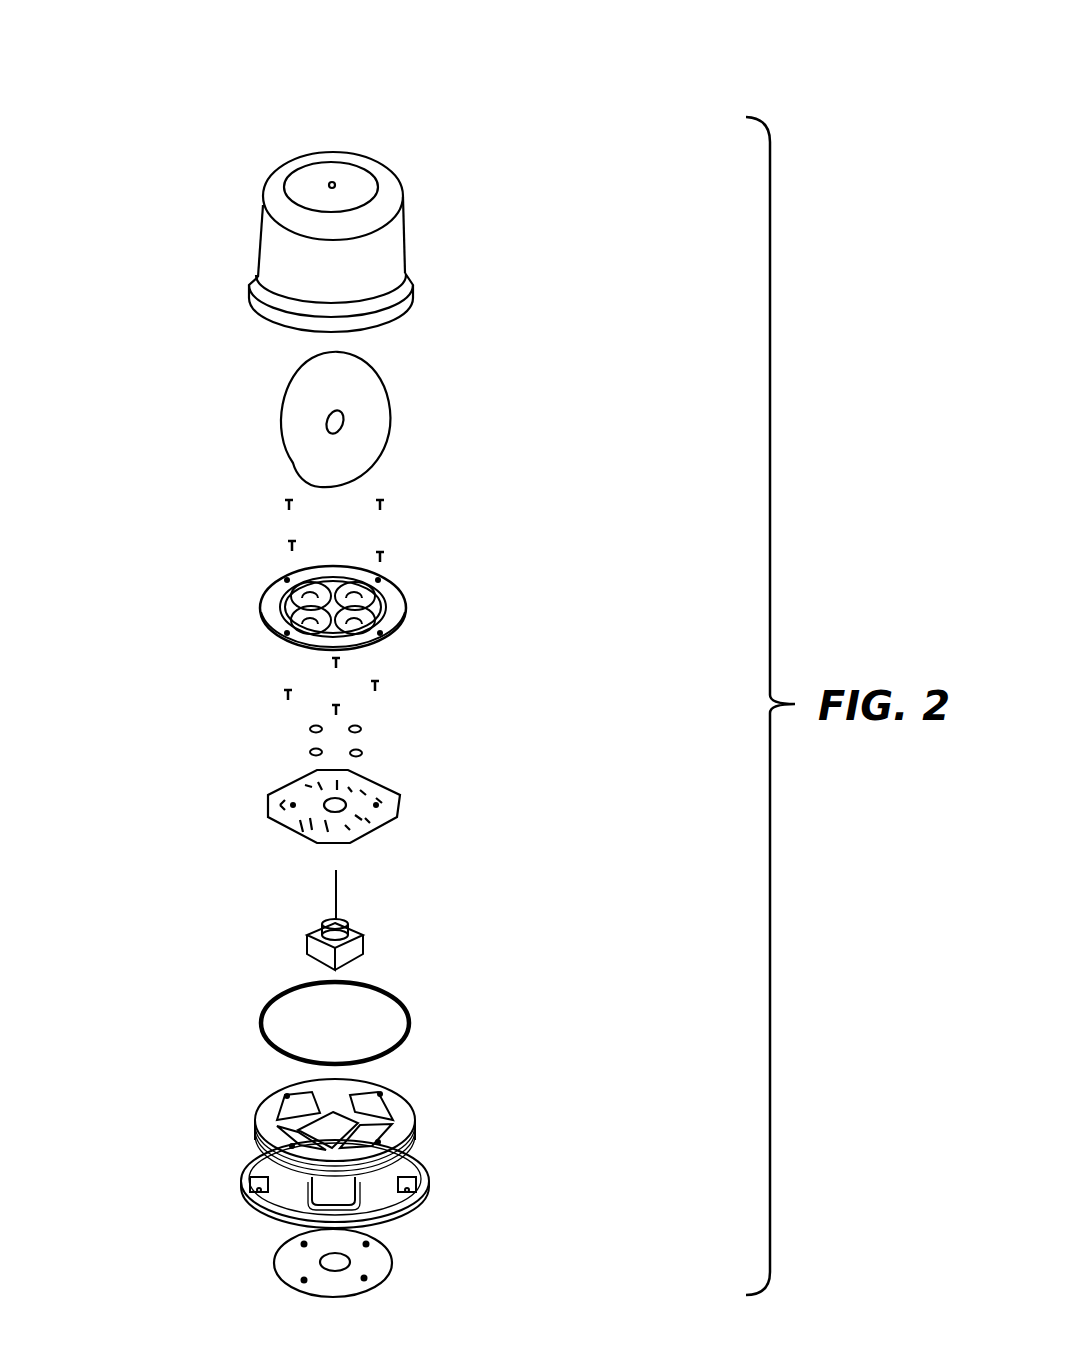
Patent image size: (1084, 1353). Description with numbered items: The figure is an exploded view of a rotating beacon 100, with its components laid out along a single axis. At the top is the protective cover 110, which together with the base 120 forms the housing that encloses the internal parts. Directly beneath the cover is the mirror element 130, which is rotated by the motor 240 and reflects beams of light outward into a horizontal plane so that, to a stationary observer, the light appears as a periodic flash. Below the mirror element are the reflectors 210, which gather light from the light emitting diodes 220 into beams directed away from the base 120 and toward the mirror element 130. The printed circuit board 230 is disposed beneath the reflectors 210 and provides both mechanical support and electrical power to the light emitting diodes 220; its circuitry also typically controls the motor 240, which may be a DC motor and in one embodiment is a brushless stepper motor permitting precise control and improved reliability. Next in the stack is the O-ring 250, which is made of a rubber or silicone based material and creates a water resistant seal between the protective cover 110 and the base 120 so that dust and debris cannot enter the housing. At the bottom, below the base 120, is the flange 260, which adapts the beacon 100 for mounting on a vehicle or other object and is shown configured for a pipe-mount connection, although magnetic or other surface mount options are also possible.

The rotating beacon 100 is at (496, 56).
The protective cover 110 is at (264, 215).
The mirror element 130 is at (290, 405).
The reflectors 210 is at (303, 593).
The light emitting diodes 220 is at (316, 727).
The printed circuit board 230 is at (290, 800).
The motor 240 is at (310, 937).
The O-ring 250 is at (310, 1058).
The base 120 is at (246, 1172).
The flange 260 is at (304, 1273).